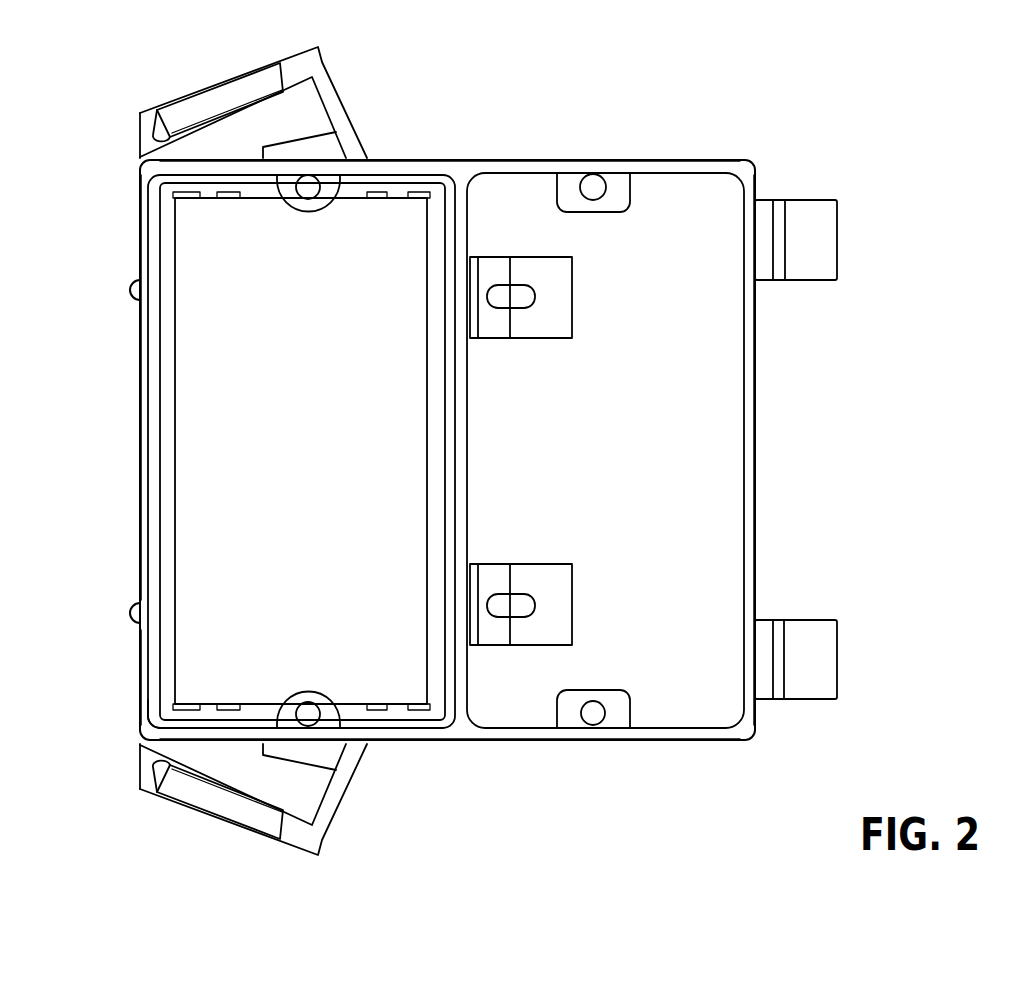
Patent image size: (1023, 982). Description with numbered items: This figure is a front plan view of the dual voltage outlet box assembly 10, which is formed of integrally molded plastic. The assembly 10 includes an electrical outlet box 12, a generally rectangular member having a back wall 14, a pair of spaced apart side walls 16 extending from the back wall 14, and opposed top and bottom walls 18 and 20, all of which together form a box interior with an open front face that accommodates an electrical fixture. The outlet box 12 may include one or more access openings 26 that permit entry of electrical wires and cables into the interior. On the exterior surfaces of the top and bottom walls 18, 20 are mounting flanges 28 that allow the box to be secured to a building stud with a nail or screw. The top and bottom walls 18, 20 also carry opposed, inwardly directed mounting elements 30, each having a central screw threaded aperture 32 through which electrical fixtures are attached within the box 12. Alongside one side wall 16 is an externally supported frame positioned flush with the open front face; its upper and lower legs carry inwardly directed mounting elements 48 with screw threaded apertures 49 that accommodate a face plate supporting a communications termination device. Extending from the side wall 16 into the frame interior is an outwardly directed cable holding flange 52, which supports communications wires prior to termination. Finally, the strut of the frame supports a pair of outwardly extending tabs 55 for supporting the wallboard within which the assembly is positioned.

The outlet box assembly 10 is at (812, 138).
The electrical outlet box 12 is at (395, 153).
The back wall 14 is at (646, 152).
The side walls 16 is at (452, 448).
The top wall 18 is at (430, 160).
The bottom wall 20 is at (395, 742).
The access openings 26 is at (147, 722).
The mounting flanges 28 is at (305, 114).
The mounting elements 30 is at (300, 203).
The screw threaded aperture 32 is at (303, 188).
The mounting elements 48 is at (607, 702).
The screw threaded apertures 49 is at (592, 722).
The cable holding flange 52 is at (558, 295).
The tabs 55 is at (818, 243).